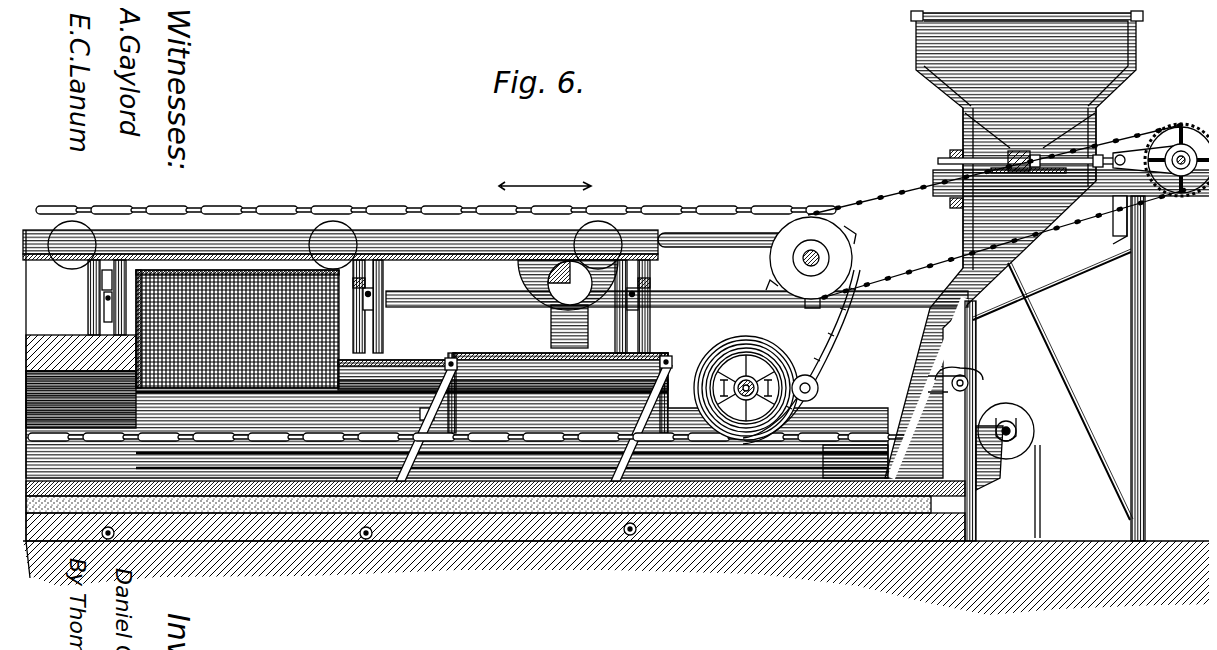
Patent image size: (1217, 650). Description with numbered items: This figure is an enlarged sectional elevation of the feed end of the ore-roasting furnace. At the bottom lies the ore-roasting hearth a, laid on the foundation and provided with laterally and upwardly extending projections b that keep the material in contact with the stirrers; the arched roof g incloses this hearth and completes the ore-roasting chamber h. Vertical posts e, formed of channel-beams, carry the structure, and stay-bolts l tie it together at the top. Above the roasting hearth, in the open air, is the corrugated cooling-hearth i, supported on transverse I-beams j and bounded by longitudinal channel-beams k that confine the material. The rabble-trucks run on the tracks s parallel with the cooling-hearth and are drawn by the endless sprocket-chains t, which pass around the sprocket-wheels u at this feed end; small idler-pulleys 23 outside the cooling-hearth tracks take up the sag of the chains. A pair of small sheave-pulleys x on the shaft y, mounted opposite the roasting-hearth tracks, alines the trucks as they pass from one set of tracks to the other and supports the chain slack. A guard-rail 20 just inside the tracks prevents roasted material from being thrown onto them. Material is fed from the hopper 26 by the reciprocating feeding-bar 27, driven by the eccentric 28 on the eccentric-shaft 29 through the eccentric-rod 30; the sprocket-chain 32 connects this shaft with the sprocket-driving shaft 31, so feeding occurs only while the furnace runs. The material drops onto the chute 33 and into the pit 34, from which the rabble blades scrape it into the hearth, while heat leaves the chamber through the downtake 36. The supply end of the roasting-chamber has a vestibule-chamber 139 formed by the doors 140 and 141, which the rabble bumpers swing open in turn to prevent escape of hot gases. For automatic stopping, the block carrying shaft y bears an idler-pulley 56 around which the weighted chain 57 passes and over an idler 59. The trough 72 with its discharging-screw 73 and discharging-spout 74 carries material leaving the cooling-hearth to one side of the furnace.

The guard-rail 20 is at (135, 440).
The idler-pulleys 23 is at (322, 262).
The hopper 26 is at (1014, 244).
The reciprocating feeding-bar 27 is at (1010, 143).
The eccentric 28 is at (1178, 146).
The eccentric-shaft 29 is at (1165, 148).
The eccentric-rod 30 is at (1055, 151).
The sprocket-driving shaft 31 is at (812, 246).
The sprocket-chain 32 is at (1148, 196).
The chute 33 is at (1060, 198).
The pit 34 is at (830, 447).
The downtake 36 is at (195, 265).
The idler-pulley 56 is at (808, 374).
The weighted chain 57 is at (962, 372).
The idler 59 is at (1015, 440).
The trough 72 is at (512, 262).
The discharging-screw 73 is at (545, 288).
The discharging-spout 74 is at (545, 320).
The vestibule-chamber 139 is at (503, 393).
The door 140 is at (640, 448).
The door 141 is at (407, 418).
The ore-roasting hearth a is at (154, 483).
The projections b is at (563, 517).
The vertical posts e is at (88, 286).
The arched roof g is at (70, 350).
The ore-roasting chamber h is at (32, 352).
The cooling-hearth i is at (104, 530).
The I-beams j is at (105, 262).
The channel-beams k is at (265, 240).
The stay-bolts l is at (365, 298).
The tracks s is at (430, 224).
The endless sprocket-chains t is at (198, 428).
The sprocket-wheels u is at (818, 222).
The small sheave-pulleys x is at (755, 345).
The shaft y is at (730, 374).